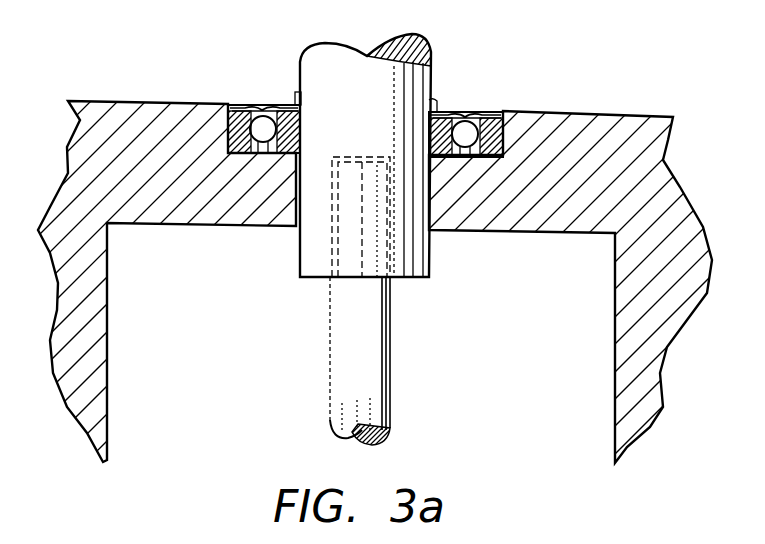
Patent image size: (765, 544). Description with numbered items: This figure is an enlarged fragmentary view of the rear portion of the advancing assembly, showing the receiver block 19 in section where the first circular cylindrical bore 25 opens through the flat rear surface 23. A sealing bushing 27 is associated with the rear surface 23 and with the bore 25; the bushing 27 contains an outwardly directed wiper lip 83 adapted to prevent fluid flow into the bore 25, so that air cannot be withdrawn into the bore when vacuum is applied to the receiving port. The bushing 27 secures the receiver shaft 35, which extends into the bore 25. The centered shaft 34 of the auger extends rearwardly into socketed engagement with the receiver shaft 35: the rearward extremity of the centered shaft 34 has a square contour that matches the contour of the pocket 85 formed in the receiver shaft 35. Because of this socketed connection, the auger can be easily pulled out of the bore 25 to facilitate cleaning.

The receiver block 19 is at (577, 174).
The rear surface 23 is at (112, 102).
The first circular cylindrical bore 25 is at (522, 391).
The sealing bushing 27 is at (489, 111).
The centered shaft 34 is at (390, 310).
The receiver shaft 35 is at (382, 96).
The outwardly directed wiper lip 83 is at (298, 96).
The pocket 85 is at (330, 247).